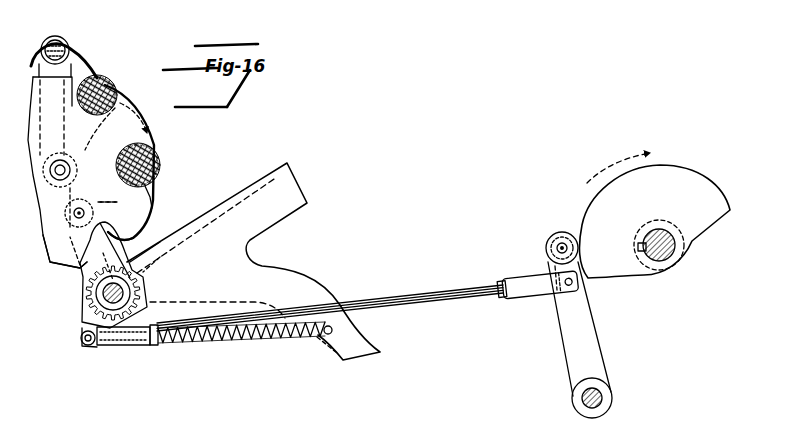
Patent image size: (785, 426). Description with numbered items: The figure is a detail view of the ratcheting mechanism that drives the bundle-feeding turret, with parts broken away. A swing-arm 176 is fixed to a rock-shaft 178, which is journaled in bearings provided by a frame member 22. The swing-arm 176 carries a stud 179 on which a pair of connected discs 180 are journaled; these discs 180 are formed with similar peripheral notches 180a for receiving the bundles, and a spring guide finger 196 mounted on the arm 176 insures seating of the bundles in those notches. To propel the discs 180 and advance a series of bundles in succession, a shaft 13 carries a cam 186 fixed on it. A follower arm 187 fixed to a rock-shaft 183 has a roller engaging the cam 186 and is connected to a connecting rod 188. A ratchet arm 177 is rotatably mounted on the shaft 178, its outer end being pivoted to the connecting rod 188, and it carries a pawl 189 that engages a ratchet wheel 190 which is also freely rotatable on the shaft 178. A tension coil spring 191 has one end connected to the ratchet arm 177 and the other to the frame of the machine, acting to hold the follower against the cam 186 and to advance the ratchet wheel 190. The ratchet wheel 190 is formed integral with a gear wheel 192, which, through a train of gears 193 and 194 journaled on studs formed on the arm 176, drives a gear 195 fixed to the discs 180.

The swing-arm 176 is at (67, 43).
The spring guide finger 196 is at (88, 64).
The stud 179 is at (60, 168).
The gear 195 is at (126, 162).
The discs 180 is at (155, 193).
The gear 194 is at (123, 207).
The gear 193 is at (135, 238).
The peripheral notches 180a is at (75, 262).
The rock-shaft 178 is at (103, 293).
The ratchet wheel 190 is at (78, 290).
The ratchet arm 177 is at (82, 335).
The pawl 189 is at (100, 340).
The tension coil spring 191 is at (250, 342).
The connecting rod 188 is at (437, 308).
The follower arm 187 is at (582, 333).
The rock-shaft 183 is at (603, 390).
The cam 186 is at (697, 190).
The shaft 13 is at (672, 251).
The frame member 22 is at (273, 270).
The gear wheel 192 is at (147, 278).